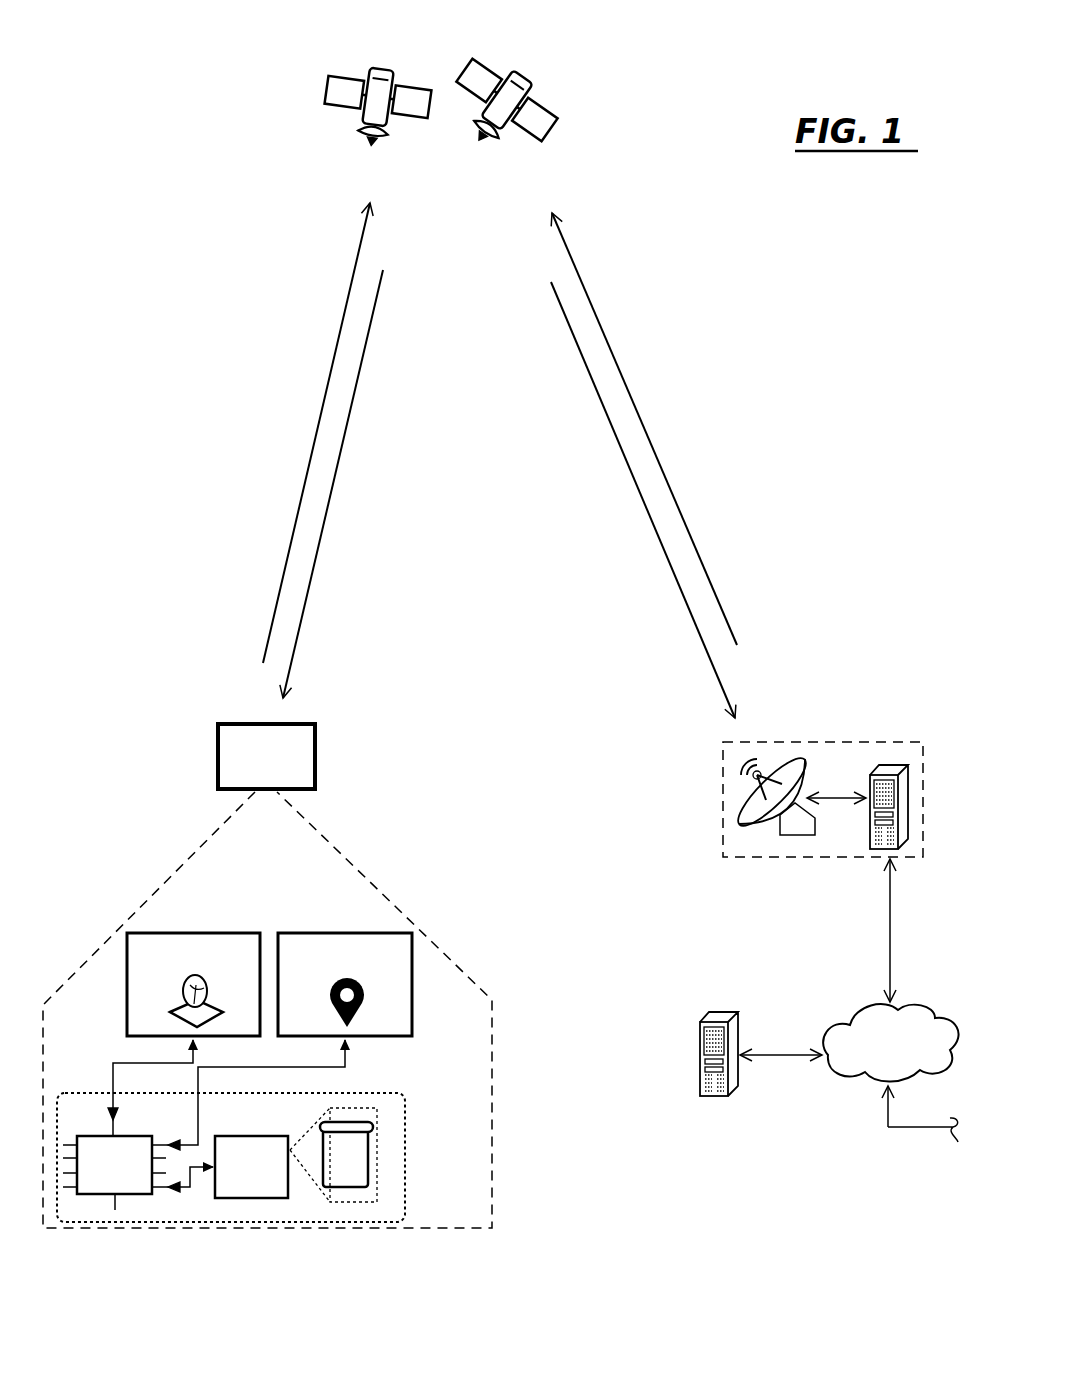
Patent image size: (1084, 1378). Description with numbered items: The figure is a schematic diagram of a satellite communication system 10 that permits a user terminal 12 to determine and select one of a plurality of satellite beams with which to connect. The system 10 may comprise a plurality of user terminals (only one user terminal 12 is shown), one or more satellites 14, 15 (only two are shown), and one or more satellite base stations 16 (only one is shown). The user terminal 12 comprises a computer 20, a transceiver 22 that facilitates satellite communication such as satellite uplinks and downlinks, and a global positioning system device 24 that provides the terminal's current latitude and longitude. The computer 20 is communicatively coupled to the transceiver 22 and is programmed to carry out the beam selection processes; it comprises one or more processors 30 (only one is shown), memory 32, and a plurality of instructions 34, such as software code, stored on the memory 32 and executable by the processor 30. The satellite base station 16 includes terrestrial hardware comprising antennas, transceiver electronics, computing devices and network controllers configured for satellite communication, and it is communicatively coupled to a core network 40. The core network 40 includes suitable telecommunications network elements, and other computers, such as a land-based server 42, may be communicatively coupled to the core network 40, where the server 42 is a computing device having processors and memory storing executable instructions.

The satellite communication system 10 is at (724, 291).
The user terminal 12 is at (217, 724).
The satellite 14 is at (338, 65).
The satellite 15 is at (460, 68).
The satellite base station 16 is at (840, 740).
The computer 20 is at (376, 1090).
The transceiver 22 is at (194, 931).
The global positioning system device 24 is at (368, 931).
The processor 30 is at (114, 1173).
The memory 32 is at (251, 1167).
The instructions 34 is at (333, 1155).
The core network 40 is at (890, 1042).
The server 42 is at (708, 1000).